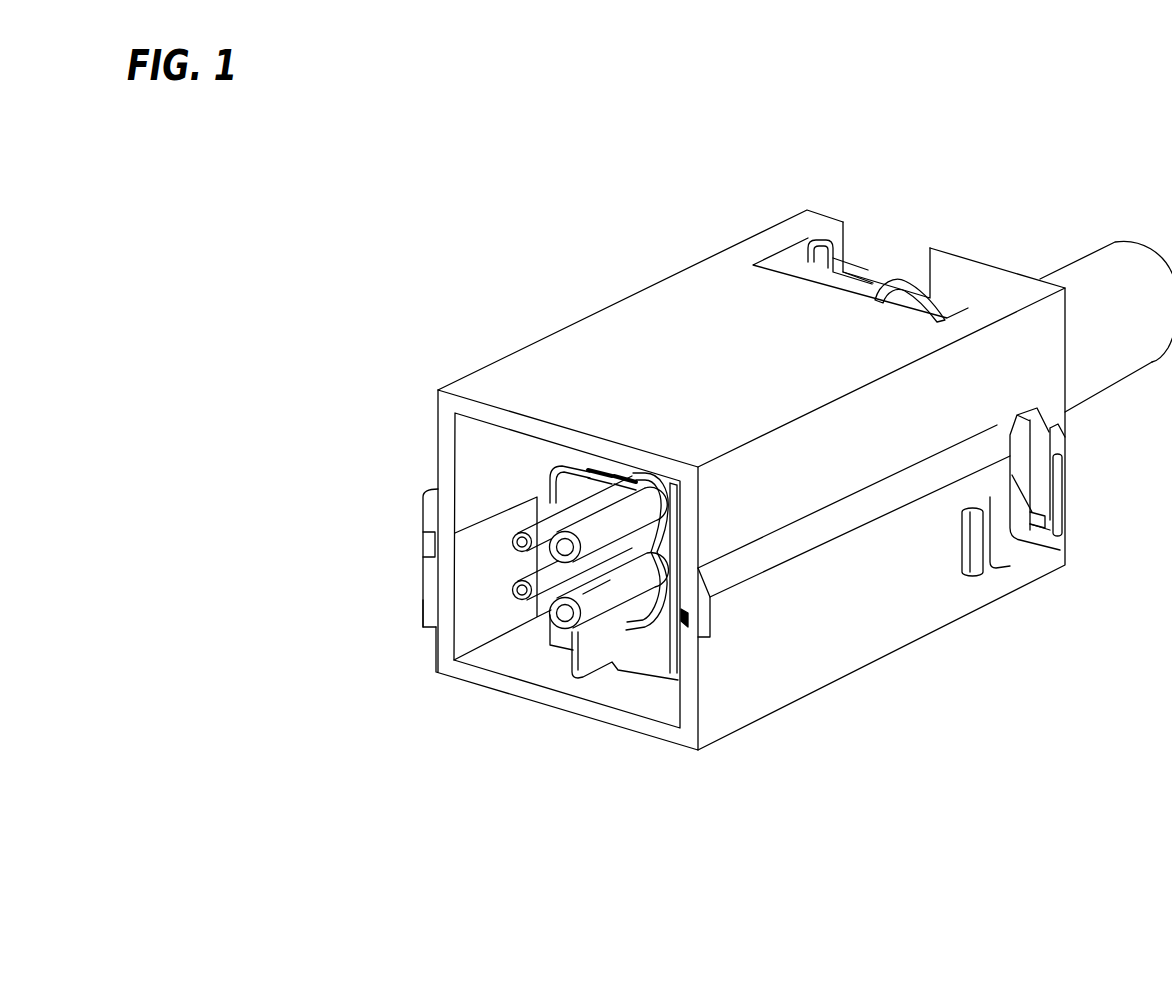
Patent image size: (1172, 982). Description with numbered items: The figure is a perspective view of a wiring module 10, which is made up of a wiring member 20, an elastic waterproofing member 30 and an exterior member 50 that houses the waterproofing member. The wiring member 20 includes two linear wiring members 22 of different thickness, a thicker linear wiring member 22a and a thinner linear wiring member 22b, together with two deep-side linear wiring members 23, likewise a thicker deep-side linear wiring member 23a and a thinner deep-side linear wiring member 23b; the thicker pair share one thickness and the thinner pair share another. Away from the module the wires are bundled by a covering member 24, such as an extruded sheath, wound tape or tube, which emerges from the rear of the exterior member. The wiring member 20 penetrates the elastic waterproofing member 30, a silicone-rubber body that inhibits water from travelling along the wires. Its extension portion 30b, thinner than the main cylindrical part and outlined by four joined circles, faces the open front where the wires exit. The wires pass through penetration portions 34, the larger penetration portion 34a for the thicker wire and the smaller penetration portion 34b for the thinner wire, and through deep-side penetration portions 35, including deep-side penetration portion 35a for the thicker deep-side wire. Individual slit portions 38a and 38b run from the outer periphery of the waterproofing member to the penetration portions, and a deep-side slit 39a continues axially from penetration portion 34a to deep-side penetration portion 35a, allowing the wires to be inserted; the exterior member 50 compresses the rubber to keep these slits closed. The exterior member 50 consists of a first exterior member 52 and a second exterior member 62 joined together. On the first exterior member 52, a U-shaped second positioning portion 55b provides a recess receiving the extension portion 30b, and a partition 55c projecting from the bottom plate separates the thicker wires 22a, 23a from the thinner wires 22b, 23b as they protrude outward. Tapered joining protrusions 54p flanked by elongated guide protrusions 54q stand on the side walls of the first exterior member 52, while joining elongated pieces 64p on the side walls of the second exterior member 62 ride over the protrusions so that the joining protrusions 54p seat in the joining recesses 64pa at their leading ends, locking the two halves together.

The wiring module 10 is at (652, 238).
The wiring member 20 is at (1064, 252).
The linear wiring member 22 is at (624, 458).
The thicker linear wiring member 22a is at (647, 480).
The thinner linear wiring member 22b is at (550, 475).
The deep-side linear wiring member 23 is at (575, 661).
The thicker deep-side linear wiring member 23a is at (597, 613).
The thinner deep-side linear wiring member 23b is at (530, 607).
The covering member 24 is at (1118, 372).
The elastic waterproofing member 30 is at (663, 555).
The extension portion 30b is at (678, 487).
The penetration portion 34 is at (507, 452).
The penetration portion 34a is at (632, 482).
The penetration portion 34b is at (540, 518).
The deep-side penetration portion 35 is at (729, 658).
The deep-side penetration portion 35a is at (684, 614).
The individual slit portion 38a is at (631, 476).
The individual slit portion 38b is at (590, 473).
The deep-side slit 39a is at (713, 625).
The exterior member 50 is at (362, 513).
The first exterior member 52 is at (422, 588).
The joining protrusion 54p is at (1033, 518).
The guide protrusion 54q is at (966, 574).
The second positioning portion 55b is at (557, 470).
The partition 55c is at (580, 668).
The second exterior member 62 is at (423, 490).
The joining elongated piece 64p is at (1022, 560).
The joining recess 64pa is at (1010, 535).